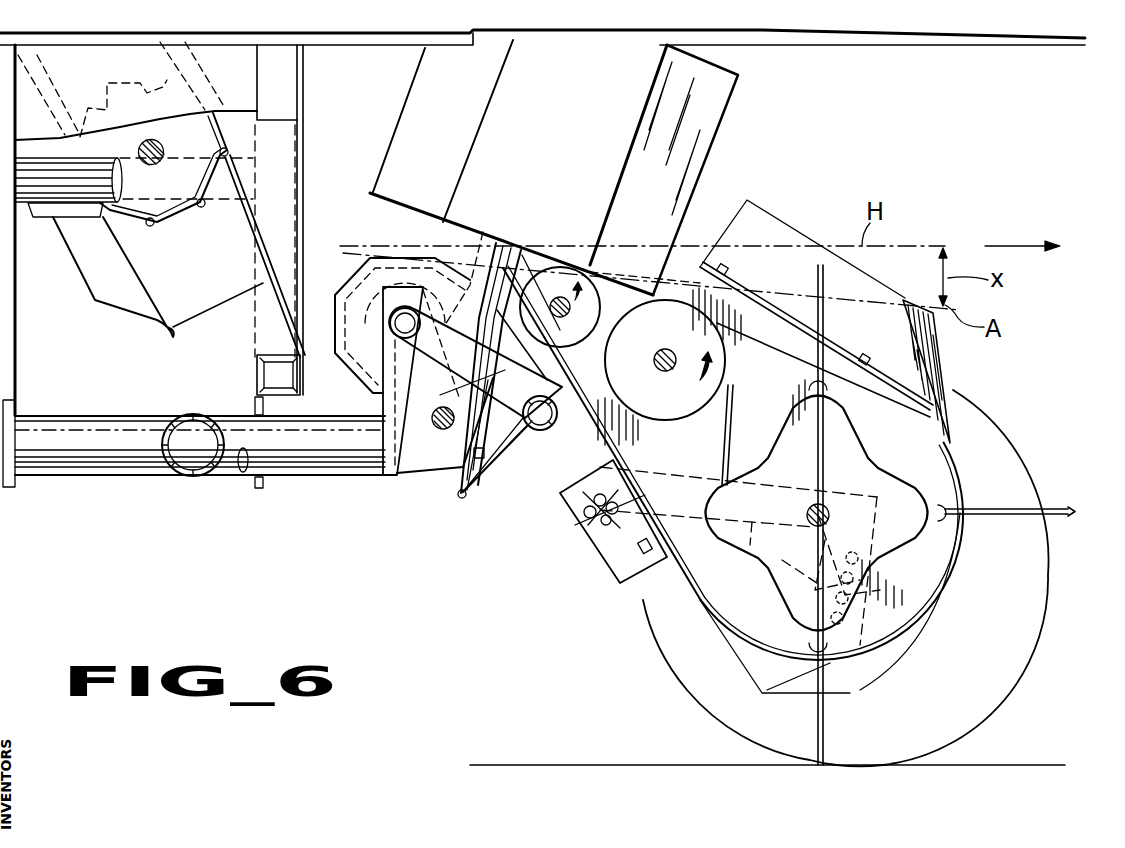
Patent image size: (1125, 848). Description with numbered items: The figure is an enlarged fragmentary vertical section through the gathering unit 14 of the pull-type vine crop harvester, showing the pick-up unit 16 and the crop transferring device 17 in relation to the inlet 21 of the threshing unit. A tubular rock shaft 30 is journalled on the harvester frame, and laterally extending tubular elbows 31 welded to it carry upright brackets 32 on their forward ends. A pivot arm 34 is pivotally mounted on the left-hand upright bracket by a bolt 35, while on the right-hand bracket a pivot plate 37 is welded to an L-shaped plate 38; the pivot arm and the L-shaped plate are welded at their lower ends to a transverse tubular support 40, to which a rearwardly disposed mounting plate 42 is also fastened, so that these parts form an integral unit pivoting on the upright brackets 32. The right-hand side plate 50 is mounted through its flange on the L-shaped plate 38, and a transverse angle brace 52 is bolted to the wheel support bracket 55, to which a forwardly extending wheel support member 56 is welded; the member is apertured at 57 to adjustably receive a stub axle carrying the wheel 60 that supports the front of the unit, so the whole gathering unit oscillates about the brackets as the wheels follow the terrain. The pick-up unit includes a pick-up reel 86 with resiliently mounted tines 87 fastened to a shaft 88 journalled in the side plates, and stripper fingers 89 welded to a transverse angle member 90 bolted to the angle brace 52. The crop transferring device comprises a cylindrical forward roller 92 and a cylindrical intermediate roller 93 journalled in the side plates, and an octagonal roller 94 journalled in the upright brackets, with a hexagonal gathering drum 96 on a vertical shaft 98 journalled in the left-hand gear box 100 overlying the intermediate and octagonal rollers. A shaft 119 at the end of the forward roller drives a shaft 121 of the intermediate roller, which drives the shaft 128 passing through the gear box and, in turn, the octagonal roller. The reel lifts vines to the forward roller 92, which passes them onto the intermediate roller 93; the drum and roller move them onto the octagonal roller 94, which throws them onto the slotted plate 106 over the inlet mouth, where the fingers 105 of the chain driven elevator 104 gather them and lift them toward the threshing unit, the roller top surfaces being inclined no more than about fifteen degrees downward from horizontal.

The gathering unit 14 is at (958, 390).
The pick-up unit 16 is at (1003, 509).
The crop transferring device 17 is at (683, 270).
The inlet 21 is at (322, 200).
The tubular rock shaft 30 is at (67, 427).
The tubular elbows 31 is at (292, 478).
The upright brackets 32 is at (400, 478).
The pivot arm 34 is at (548, 392).
The bolt 35 is at (418, 296).
The pivot plate 37 is at (480, 245).
The L-shaped plate 38 is at (525, 352).
The transverse tubular support 40 is at (548, 438).
The left-hand mounting plate 42 is at (470, 496).
The right-hand side plate 50 is at (772, 395).
The transverse angle brace 52 is at (588, 513).
The right-hand wheel support bracket 55 is at (615, 567).
The wheel support member 56 is at (815, 555).
The apertures 57 is at (869, 571).
The wheel 60 is at (690, 688).
The pick-up reel 86 is at (842, 458).
The tines 87 is at (825, 330).
The shaft 88 is at (830, 506).
The stripper fingers 89 is at (735, 632).
The transverse angle member 90 is at (622, 545).
The forward roller 92 is at (690, 342).
The intermediate roller 93 is at (563, 282).
The octagonal roller 94 is at (352, 290).
The hexagonal gathering drum 96 is at (580, 104).
The vertical shaft 98 is at (505, 257).
The left-hand gear box 100 is at (470, 460).
The chain driven elevator 104 is at (232, 143).
The elevator fingers 105 is at (157, 277).
The slotted plate 106 is at (247, 220).
The shaft 119 is at (655, 375).
The shaft 121 is at (550, 305).
The shaft 128 is at (456, 439).